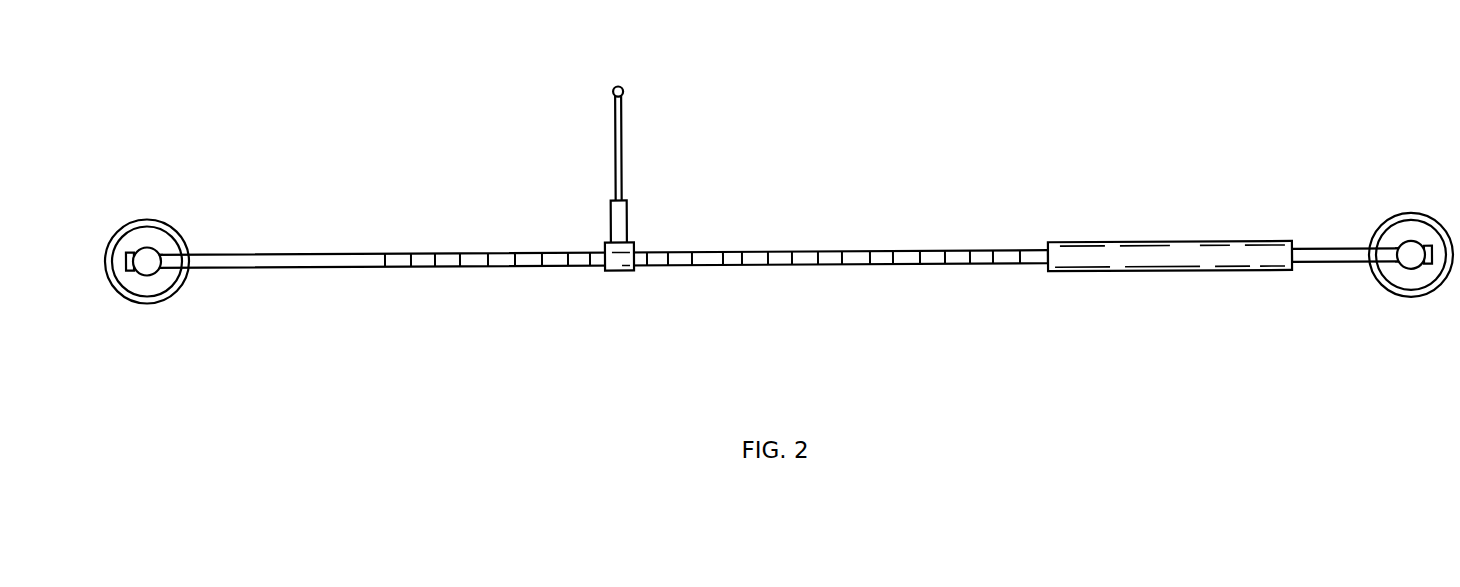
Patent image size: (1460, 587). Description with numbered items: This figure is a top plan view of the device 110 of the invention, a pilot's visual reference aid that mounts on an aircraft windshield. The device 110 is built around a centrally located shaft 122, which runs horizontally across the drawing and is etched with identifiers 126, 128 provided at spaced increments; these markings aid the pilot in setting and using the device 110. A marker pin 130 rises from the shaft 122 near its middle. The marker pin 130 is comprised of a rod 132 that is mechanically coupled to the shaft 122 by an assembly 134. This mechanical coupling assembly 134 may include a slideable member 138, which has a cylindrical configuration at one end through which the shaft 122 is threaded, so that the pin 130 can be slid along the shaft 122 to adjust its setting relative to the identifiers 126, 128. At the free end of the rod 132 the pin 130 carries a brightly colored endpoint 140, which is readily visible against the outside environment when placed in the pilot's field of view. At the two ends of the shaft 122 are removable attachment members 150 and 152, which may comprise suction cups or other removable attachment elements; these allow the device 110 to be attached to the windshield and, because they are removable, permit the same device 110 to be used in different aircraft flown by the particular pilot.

The device 110 is at (908, 307).
The shaft 122 is at (427, 252).
The identifier 126 is at (517, 260).
The identifier 128 is at (723, 262).
The marker pin 130 is at (620, 188).
The rod 132 is at (615, 192).
The assembly 134 is at (627, 229).
The slideable member 138 is at (620, 277).
The endpoint 140 is at (614, 85).
The removable attachment member 150 is at (184, 215).
The removable attachment member 152 is at (1373, 213).